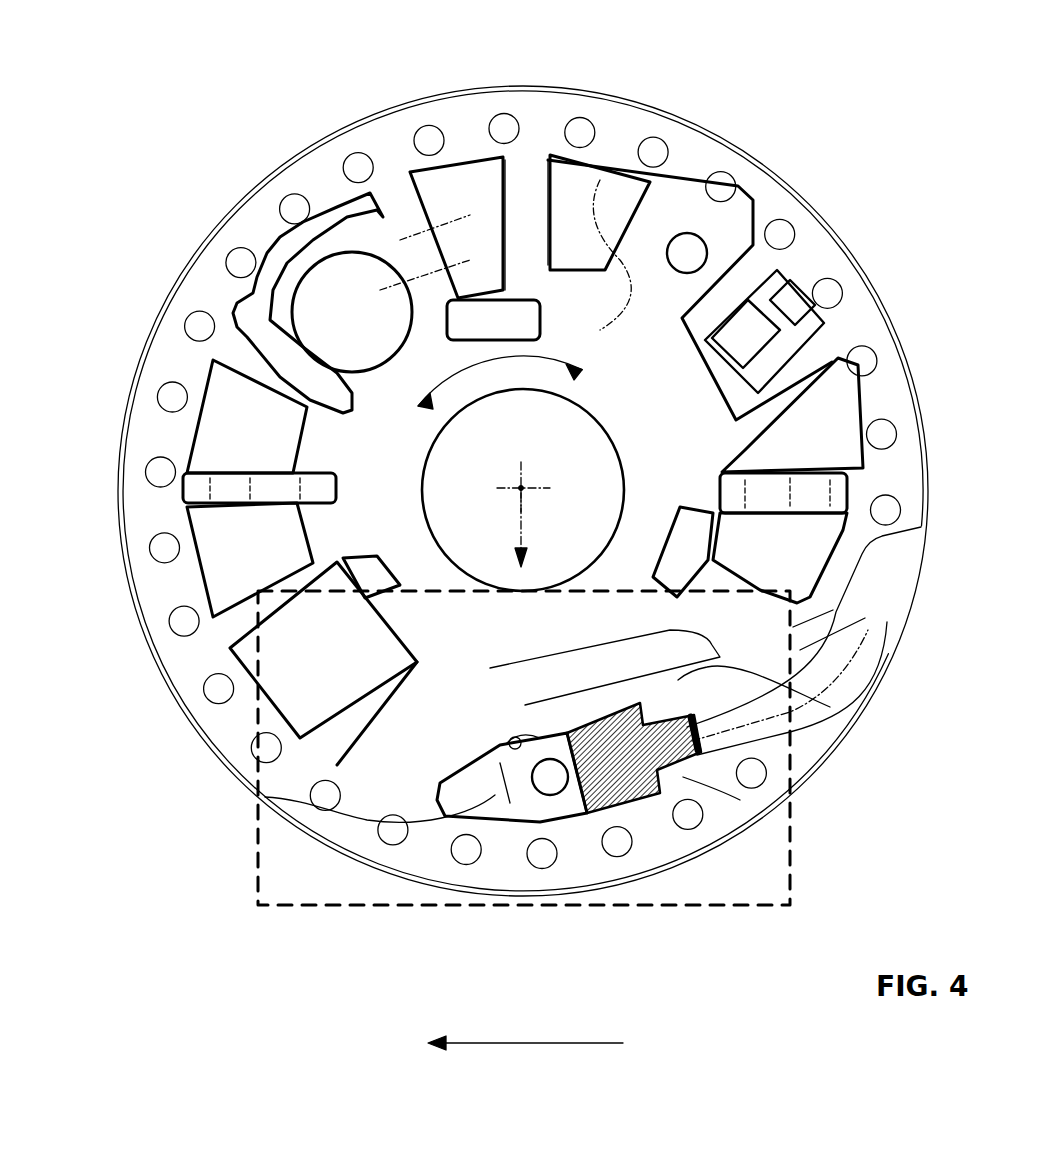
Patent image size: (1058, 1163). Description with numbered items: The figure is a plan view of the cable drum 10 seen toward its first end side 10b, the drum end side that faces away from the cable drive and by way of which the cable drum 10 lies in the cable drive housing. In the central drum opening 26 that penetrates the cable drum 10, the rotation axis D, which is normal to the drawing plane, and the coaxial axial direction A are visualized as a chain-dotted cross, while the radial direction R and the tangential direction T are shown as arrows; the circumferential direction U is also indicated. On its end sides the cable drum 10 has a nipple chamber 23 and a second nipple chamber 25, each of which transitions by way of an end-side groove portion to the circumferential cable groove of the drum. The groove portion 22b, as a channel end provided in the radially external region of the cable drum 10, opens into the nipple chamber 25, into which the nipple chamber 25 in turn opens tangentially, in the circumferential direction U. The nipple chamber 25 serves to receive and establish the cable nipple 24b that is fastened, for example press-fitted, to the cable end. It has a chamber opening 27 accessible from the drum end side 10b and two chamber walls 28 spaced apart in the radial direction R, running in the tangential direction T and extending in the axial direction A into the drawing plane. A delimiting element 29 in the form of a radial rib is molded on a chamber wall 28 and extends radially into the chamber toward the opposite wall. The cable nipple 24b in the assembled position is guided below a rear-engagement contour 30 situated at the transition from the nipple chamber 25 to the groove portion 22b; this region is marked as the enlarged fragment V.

The cable drum 10 is at (347, 126).
The end side 10b is at (612, 118).
The central drum opening 26 is at (573, 455).
The nipple chamber 23 is at (762, 313).
The groove portion 22b is at (713, 730).
The rear-engagement contour 30 is at (830, 707).
The cable nipple 24b is at (622, 787).
The chamber walls 28 is at (527, 722).
The delimiting element 29 is at (505, 740).
The chamber opening 27 is at (265, 797).
The nipple chamber 25 is at (495, 786).
The circumferential direction U is at (486, 358).
The axial direction A is at (521, 488).
The rotation axis D is at (521, 488).
The radial direction R is at (517, 545).
The enlarged fragment V is at (407, 907).
The tangential direction T is at (517, 1043).